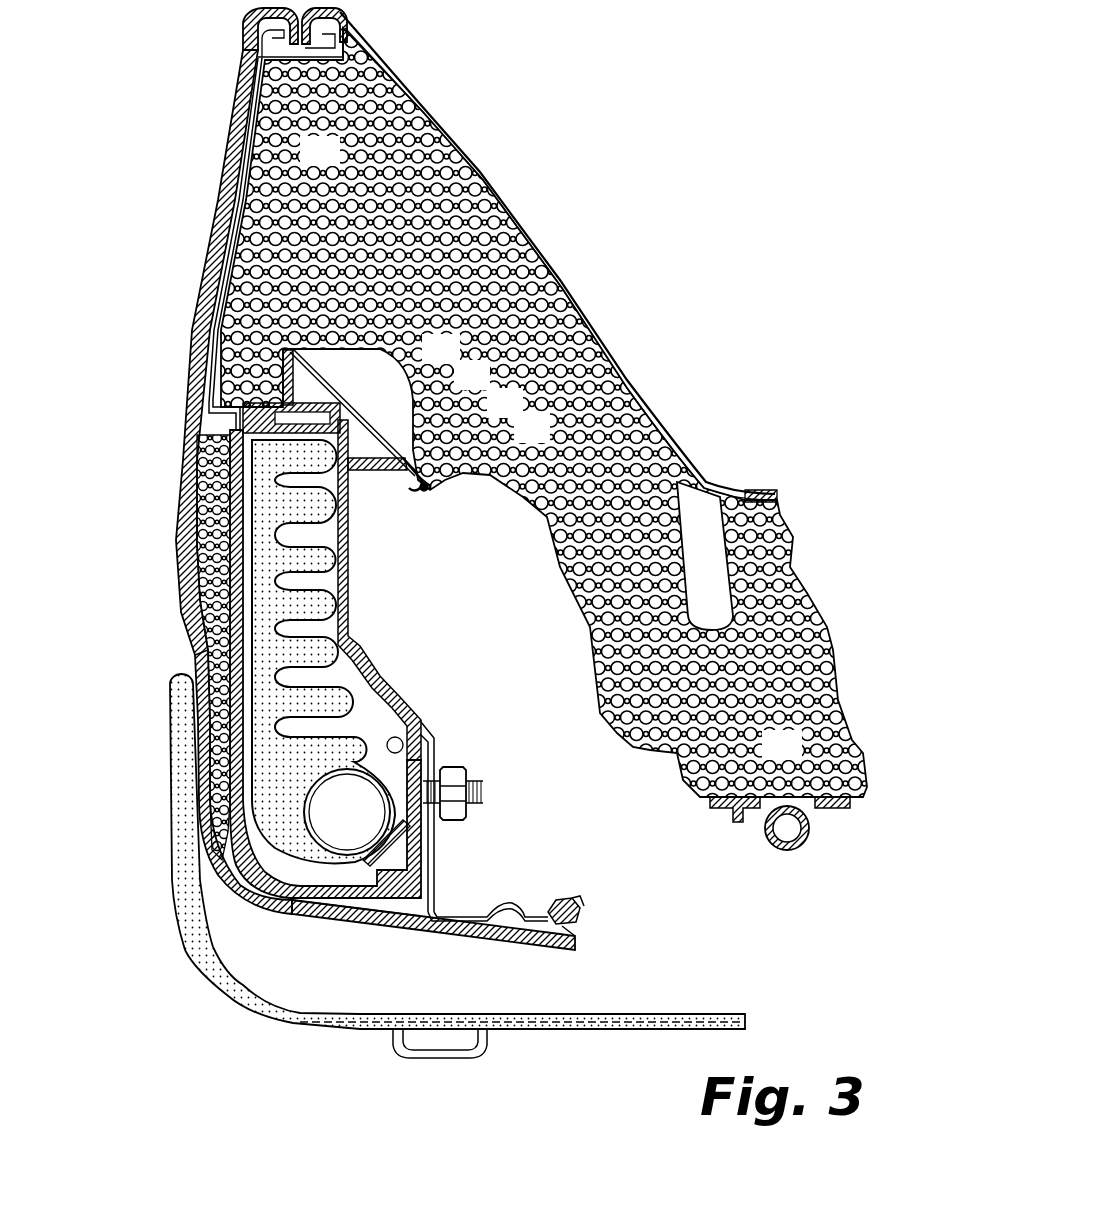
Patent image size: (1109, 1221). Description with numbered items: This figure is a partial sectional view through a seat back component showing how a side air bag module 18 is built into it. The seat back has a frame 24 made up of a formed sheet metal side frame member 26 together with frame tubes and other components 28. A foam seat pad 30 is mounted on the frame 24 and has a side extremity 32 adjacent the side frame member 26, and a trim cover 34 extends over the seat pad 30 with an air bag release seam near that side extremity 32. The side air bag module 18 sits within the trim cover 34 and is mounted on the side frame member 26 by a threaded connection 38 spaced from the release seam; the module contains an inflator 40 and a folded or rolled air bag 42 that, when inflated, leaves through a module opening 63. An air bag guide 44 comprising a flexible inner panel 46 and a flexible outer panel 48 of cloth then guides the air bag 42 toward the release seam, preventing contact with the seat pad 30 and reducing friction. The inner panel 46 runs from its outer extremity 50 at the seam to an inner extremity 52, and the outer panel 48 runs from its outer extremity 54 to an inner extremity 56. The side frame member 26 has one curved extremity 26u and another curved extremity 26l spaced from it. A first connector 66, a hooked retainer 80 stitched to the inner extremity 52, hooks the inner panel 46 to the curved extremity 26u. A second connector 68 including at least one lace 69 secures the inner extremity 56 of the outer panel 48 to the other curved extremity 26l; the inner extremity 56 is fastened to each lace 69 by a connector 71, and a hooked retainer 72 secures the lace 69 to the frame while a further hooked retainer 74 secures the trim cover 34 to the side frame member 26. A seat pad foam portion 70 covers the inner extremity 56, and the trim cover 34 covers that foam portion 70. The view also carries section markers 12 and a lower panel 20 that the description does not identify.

The outer extremity 54 is at (240, 50).
The side extremity 32 is at (365, 70).
The air bag guide 44 is at (212, 270).
The outer extremity 50 is at (302, 62).
The module opening 63 is at (282, 345).
The trim cover 34 is at (192, 422).
The inner panel 46 is at (357, 396).
The inner extremity 52 is at (420, 474).
The first connector 66 is at (427, 482).
The hooked retainer 80 is at (433, 490).
The foam seat pad 30 is at (642, 468).
The outer panel 48 is at (200, 462).
The seat pad foam portion 70 is at (190, 500).
The side frame member 26 is at (390, 665).
The curved extremity 26u is at (420, 492).
The side air bag module 18 is at (238, 583).
The air bag 42 is at (255, 637).
The inner extremity 56 is at (200, 647).
The connector 71 is at (186, 680).
The threaded connection 38 is at (455, 762).
The frame tubes and other components 28 is at (787, 805).
The inflator 40 is at (300, 820).
The curved extremity 26l is at (502, 902).
The hooked retainer 72 is at (553, 905).
The hooked retainer 74 is at (567, 903).
The section view arrows 12 is at (610, 891).
The second connector 68 is at (590, 934).
The frame 24 is at (411, 917).
The lace 69 is at (345, 907).
The floor panel 20 is at (547, 1032).